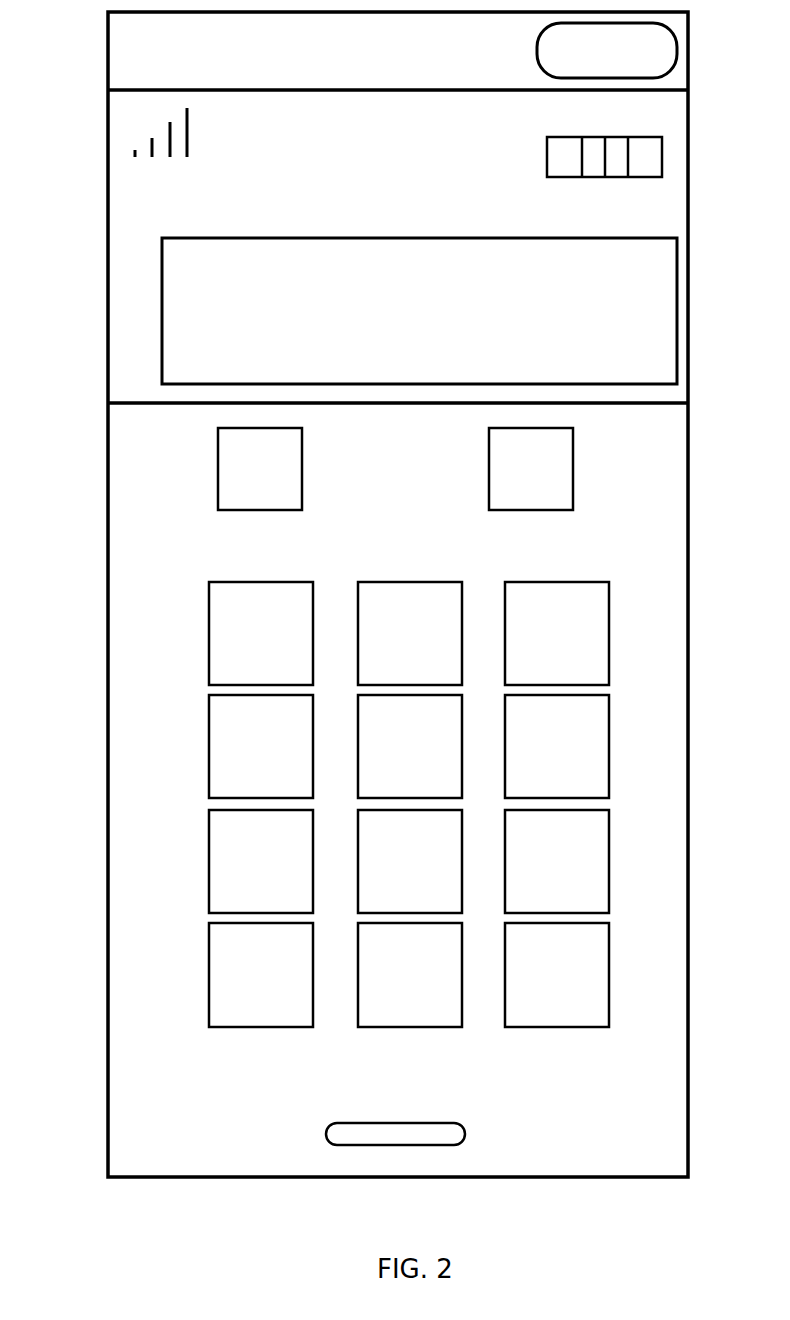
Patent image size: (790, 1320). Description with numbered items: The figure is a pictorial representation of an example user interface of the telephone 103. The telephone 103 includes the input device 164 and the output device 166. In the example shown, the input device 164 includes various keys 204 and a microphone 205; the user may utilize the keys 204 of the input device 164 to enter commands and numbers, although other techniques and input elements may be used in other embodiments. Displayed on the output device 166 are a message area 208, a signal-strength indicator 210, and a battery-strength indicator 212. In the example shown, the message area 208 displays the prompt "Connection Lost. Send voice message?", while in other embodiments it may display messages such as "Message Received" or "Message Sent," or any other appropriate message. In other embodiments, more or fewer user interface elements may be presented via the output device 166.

The telephone 103 is at (106, 1181).
The input device 164 is at (108, 643).
The output device 166 is at (108, 225).
The keys 204 is at (621, 536).
The microphone 205 is at (396, 1124).
The message area 208 is at (418, 237).
The signal-strength indicator 210 is at (203, 143).
The battery-strength indicator 212 is at (546, 155).